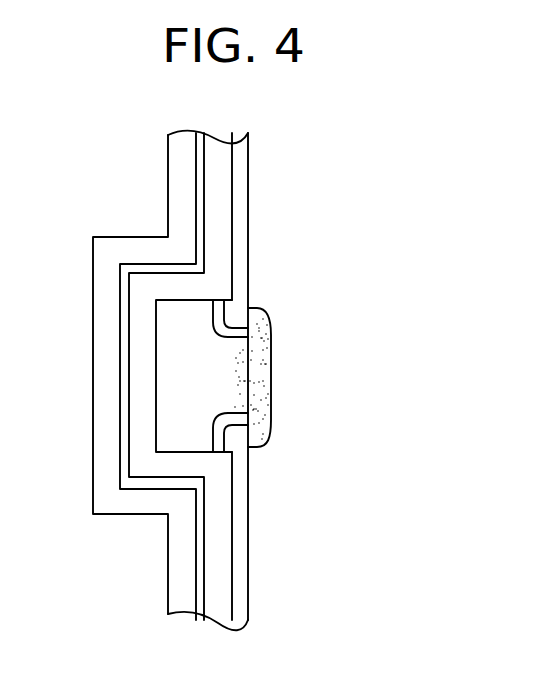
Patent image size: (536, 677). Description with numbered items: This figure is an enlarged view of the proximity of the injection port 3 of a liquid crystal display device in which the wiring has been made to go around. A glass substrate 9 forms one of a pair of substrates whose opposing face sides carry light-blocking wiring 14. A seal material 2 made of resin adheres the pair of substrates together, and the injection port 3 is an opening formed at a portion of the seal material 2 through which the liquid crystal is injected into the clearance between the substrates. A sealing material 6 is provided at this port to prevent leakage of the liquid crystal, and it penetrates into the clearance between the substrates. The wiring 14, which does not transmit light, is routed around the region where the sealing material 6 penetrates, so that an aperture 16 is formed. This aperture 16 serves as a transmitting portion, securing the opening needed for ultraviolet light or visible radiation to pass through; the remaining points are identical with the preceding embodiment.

The wiring 14 is at (180, 172).
The seal material 2 is at (218, 323).
The injection port 3 is at (220, 363).
The sealing material 6 is at (262, 373).
The aperture 16 is at (190, 383).
The glass substrate 9 is at (235, 505).